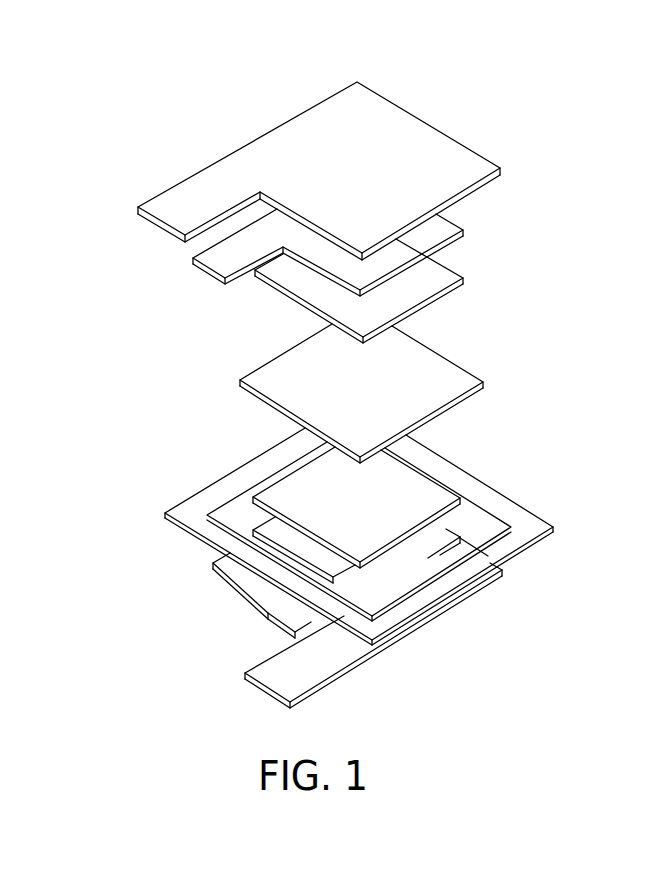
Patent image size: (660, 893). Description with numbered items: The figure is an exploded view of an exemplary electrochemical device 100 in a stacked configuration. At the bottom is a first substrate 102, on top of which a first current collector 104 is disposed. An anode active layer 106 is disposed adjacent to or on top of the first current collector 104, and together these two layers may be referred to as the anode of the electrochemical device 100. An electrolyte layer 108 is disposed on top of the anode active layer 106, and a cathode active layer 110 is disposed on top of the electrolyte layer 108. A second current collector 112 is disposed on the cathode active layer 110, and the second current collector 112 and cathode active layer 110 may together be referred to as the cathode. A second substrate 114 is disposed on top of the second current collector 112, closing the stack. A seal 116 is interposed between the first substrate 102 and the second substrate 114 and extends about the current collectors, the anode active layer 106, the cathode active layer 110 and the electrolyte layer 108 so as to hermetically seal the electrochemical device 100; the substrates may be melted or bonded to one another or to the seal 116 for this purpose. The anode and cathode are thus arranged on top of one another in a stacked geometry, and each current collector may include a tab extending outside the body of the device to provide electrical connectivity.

The electrochemical device 100 is at (136, 107).
The first substrate 102 is at (480, 590).
The first current collector 104 is at (437, 533).
The anode active layer 106 is at (433, 500).
The electrolyte layer 108 is at (425, 363).
The cathode active layer 110 is at (440, 276).
The second current collector 112 is at (443, 227).
The second substrate 114 is at (435, 147).
The seal 116 is at (527, 533).